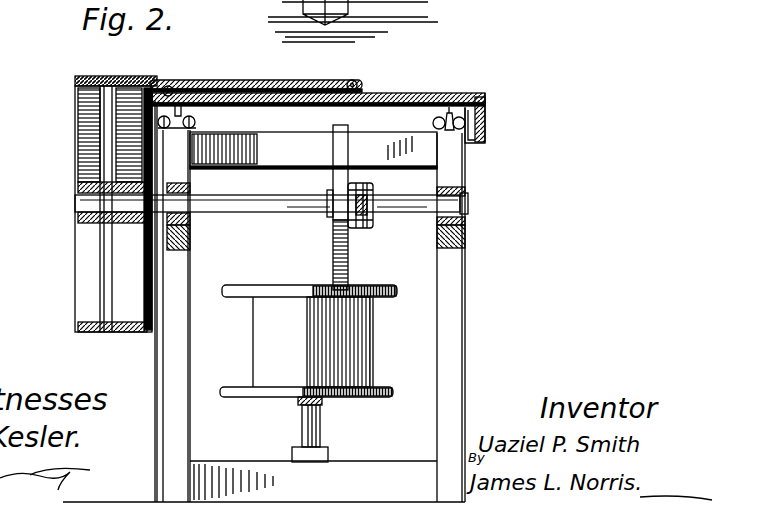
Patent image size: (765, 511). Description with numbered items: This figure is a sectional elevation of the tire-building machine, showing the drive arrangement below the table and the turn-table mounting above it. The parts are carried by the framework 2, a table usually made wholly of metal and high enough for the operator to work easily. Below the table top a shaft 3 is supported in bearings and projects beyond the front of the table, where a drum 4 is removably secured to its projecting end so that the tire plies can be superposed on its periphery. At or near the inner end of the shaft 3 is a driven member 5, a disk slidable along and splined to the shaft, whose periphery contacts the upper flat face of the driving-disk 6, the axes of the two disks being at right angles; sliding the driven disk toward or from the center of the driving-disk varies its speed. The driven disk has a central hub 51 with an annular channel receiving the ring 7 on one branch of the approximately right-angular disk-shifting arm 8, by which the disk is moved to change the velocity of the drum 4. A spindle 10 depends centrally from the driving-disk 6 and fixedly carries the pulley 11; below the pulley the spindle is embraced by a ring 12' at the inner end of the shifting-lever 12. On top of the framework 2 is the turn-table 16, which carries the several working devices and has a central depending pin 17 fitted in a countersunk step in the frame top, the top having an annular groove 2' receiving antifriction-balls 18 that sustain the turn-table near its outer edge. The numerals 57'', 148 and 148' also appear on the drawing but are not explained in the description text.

The framework 2 is at (281, 302).
The annular groove 2' is at (283, 69).
The shaft 3 is at (244, 213).
The drum 4 is at (87, 160).
The driven member 5 is at (348, 250).
The central hub 51 is at (375, 191).
The driving-disk 6 is at (288, 289).
The ring 7 is at (372, 230).
The disk-shifting arm 8 is at (347, 218).
The spindle 10 is at (320, 417).
The pulley 11 is at (323, 365).
The shifting-lever 12 is at (314, 405).
The ring 12' is at (282, 416).
The turn-table 16 is at (298, 68).
The depending pin 17 is at (300, 84).
The antifriction-balls 18 is at (157, 78).
The wheel shading 57'' is at (56, 135).
The bolts 148 is at (355, 116).
The cross member and wing nut 148' is at (374, 138).